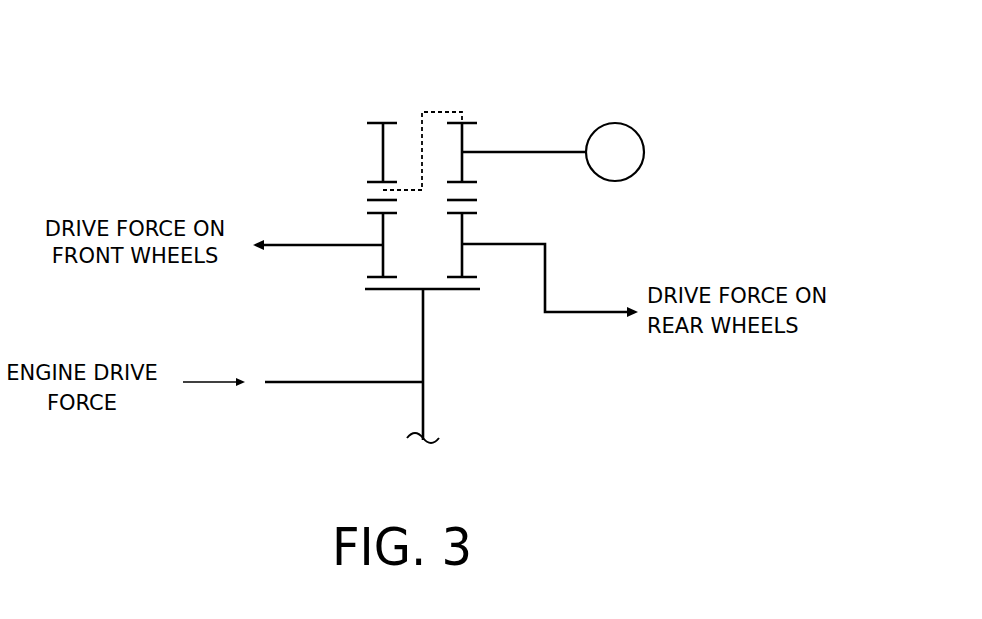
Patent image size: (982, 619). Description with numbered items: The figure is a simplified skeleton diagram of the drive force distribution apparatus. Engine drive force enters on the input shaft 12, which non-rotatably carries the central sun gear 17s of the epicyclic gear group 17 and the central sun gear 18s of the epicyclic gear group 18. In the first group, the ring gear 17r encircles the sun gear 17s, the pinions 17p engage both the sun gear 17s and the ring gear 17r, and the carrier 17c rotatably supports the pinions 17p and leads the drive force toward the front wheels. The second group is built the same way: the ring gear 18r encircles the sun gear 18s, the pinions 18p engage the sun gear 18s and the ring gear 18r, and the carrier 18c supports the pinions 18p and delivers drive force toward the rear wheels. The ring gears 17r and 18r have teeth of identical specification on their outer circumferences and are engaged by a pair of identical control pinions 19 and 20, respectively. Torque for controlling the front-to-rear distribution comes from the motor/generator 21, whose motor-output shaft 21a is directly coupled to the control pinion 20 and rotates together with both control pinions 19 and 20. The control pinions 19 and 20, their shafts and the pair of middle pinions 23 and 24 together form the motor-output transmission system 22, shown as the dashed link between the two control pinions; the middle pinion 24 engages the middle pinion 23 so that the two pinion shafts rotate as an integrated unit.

The input shaft 12 is at (325, 385).
The epicyclic gear group 17 is at (370, 298).
The central sun gear 17s is at (388, 292).
The pinions 17p is at (378, 258).
The carrier 17c is at (338, 244).
The ring gear 17r is at (372, 196).
The epicyclic gear group 18 is at (455, 300).
The central sun gear 18s is at (466, 292).
The pinions 18p is at (466, 258).
The carrier 18c is at (490, 243).
The ring gear 18r is at (468, 197).
The control pinion 19 is at (371, 121).
The control pinion 20 is at (472, 121).
The motor/generator 21 is at (613, 122).
The motor-output shaft 21a is at (523, 150).
The motor-output transmission system 22 is at (438, 96).
The middle pinion 23 is at (422, 151).
The middle pinion 24 is at (426, 110).